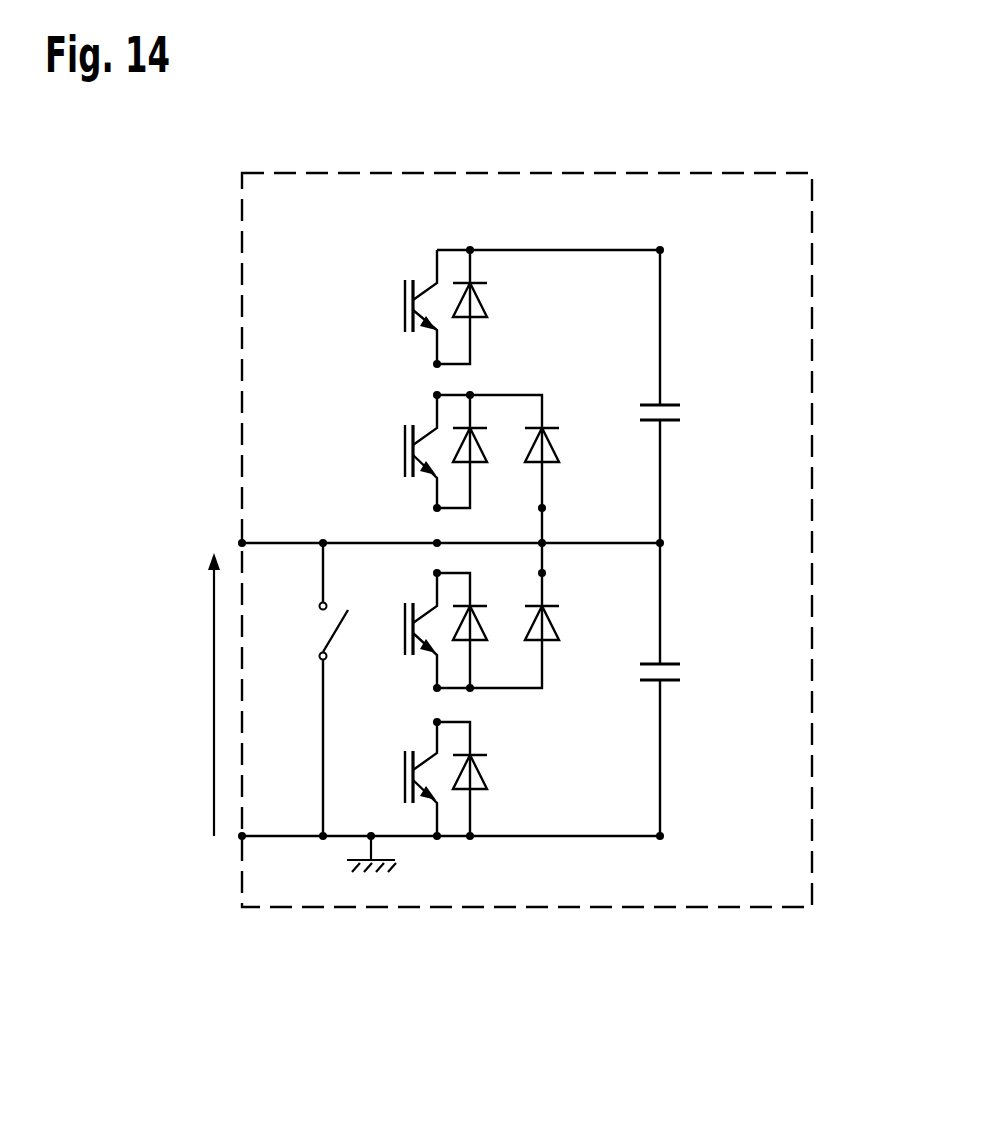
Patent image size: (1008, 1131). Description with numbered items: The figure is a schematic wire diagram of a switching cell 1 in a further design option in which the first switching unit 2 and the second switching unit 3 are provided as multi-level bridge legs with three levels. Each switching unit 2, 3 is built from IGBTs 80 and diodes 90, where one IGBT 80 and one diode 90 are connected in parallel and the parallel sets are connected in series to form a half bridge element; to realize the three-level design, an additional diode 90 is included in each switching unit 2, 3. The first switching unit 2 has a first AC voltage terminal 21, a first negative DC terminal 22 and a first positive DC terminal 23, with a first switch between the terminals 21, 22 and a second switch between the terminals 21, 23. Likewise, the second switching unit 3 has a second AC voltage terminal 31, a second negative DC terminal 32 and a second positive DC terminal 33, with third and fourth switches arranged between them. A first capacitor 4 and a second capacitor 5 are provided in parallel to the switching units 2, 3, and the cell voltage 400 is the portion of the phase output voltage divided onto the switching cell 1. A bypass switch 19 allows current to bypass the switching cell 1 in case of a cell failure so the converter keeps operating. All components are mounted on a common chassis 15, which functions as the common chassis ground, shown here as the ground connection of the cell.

The switching cell 1 is at (185, 158).
The first switching unit 2 is at (404, 553).
The second switching unit 3 is at (510, 712).
The first capacitor 4 is at (673, 395).
The second capacitor 5 is at (673, 655).
The chassis 15 is at (355, 875).
The bypass switch 19 is at (318, 625).
The first AC voltage terminal 21 is at (430, 506).
The first negative DC terminal 22 is at (548, 505).
The first positive DC terminal 23 is at (660, 243).
The second AC voltage terminal 31 is at (431, 577).
The second negative DC terminal 32 is at (668, 836).
The second positive DC terminal 33 is at (548, 575).
The IGBT 80 is at (418, 290).
The diode 90 is at (478, 312).
The cell voltage 400 is at (214, 653).